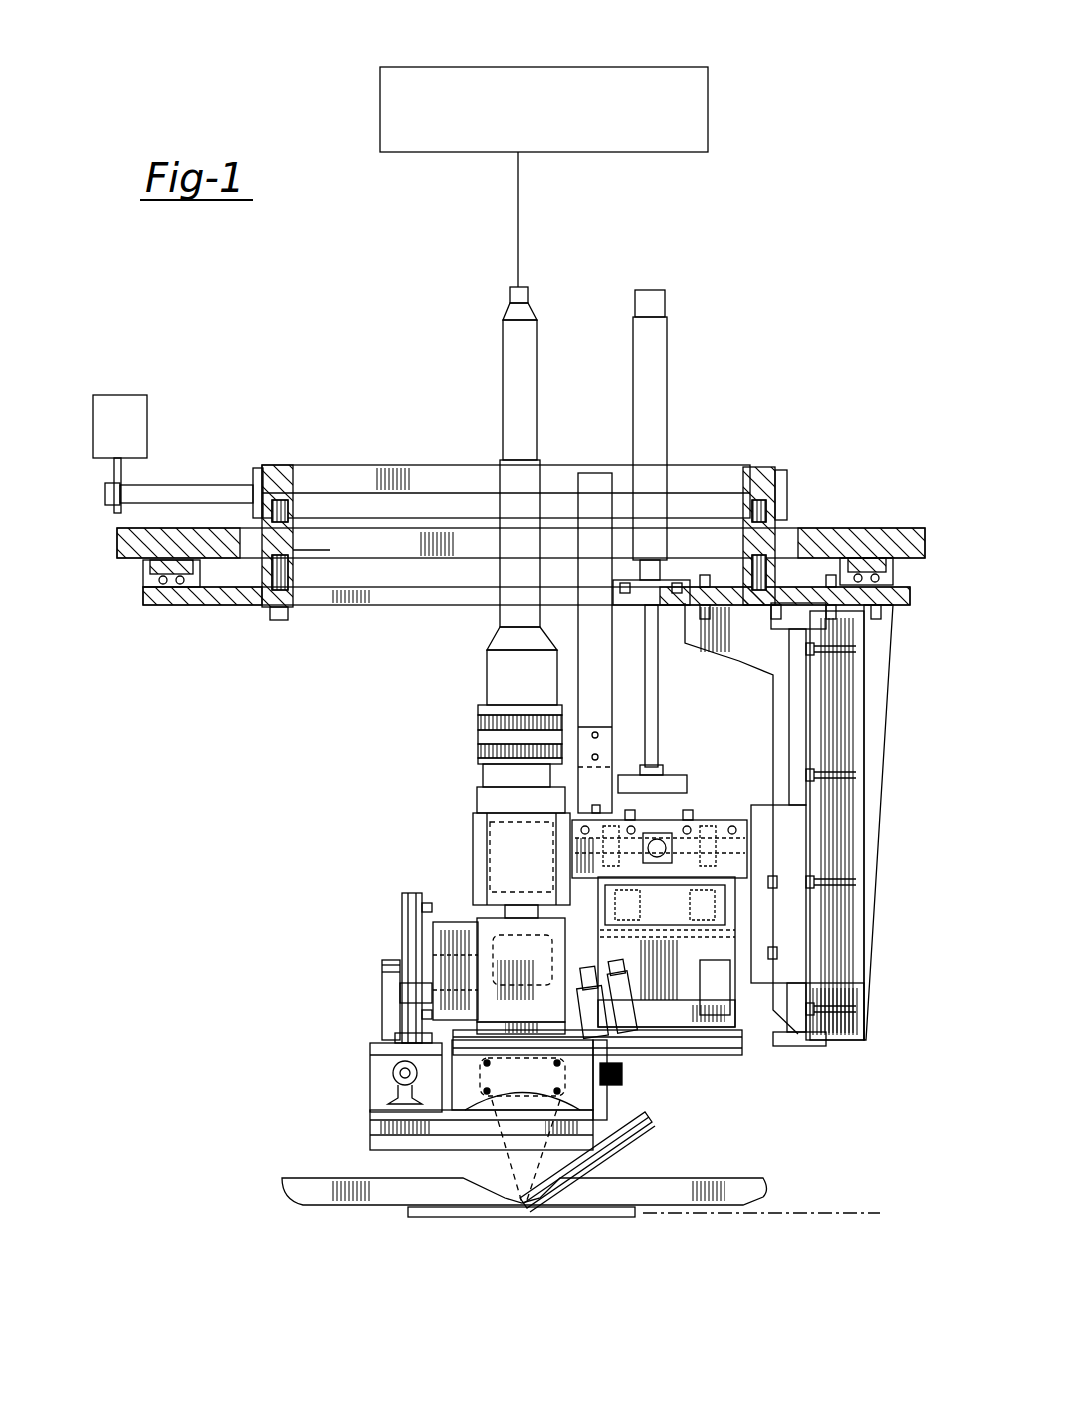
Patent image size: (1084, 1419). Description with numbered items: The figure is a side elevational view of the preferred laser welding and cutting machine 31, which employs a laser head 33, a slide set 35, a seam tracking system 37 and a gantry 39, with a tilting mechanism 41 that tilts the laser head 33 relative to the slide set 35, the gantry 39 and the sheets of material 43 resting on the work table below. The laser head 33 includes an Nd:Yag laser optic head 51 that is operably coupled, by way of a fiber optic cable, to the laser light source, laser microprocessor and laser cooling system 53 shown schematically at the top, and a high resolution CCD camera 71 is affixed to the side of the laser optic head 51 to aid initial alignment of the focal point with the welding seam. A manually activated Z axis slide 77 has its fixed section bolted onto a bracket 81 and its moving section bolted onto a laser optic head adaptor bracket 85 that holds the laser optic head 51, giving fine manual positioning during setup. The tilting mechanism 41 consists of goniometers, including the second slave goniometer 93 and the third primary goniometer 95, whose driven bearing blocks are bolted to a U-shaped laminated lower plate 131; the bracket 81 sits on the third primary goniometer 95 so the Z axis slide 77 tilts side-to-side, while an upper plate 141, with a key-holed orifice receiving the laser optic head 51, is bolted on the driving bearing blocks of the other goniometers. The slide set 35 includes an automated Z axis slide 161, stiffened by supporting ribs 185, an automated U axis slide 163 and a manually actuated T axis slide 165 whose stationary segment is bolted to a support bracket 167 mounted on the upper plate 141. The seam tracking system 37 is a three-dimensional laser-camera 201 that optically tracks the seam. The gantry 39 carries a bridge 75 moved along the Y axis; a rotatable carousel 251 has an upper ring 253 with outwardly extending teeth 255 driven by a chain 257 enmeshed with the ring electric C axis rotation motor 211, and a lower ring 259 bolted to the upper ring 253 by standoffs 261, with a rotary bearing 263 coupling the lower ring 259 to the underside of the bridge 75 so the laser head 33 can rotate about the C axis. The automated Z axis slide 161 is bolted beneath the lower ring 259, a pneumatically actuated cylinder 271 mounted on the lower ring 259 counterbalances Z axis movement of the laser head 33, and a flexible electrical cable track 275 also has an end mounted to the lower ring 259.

The laser welding and cutting machine 31 is at (714, 426).
The laser head 33 is at (325, 949).
The slide set 35 is at (777, 860).
The seam tracking system 37 is at (628, 1073).
The gantry 39 is at (834, 485).
The tilting mechanism 41 is at (344, 1036).
The sheets of material 43 is at (552, 1215).
The laser optic head 51 is at (518, 686).
The laser cooling system 53 is at (380, 86).
The CCD camera 71 is at (495, 833).
The bridge 75 is at (890, 530).
The Z axis slide 77 is at (400, 930).
The bracket 81 is at (393, 1000).
The laser optic head adaptor bracket 85 is at (460, 928).
The second slave goniometer 93 is at (487, 1103).
The third primary goniometer 95 is at (382, 1090).
The lower plate 131 is at (447, 1128).
The upper plate 141 is at (735, 1043).
The automated Z axis slide 161 is at (795, 837).
The automated U axis slide 163 is at (723, 841).
The T axis slide 165 is at (688, 906).
The support bracket 167 is at (700, 973).
The supporting ribs 185 is at (880, 694).
The laser-camera 201 is at (648, 1118).
The C axis rotation motor 211 is at (110, 415).
The rotatable carousel 251 is at (778, 490).
The upper ring 253 is at (340, 485).
The teeth 255 is at (252, 480).
The chain 257 is at (160, 495).
The lower ring 259 is at (210, 605).
The standoffs 261 is at (297, 550).
The rotary bearing 263 is at (143, 572).
The pneumatically actuated cylinder 271 is at (650, 392).
The flexible electrical cable track 275 is at (590, 503).